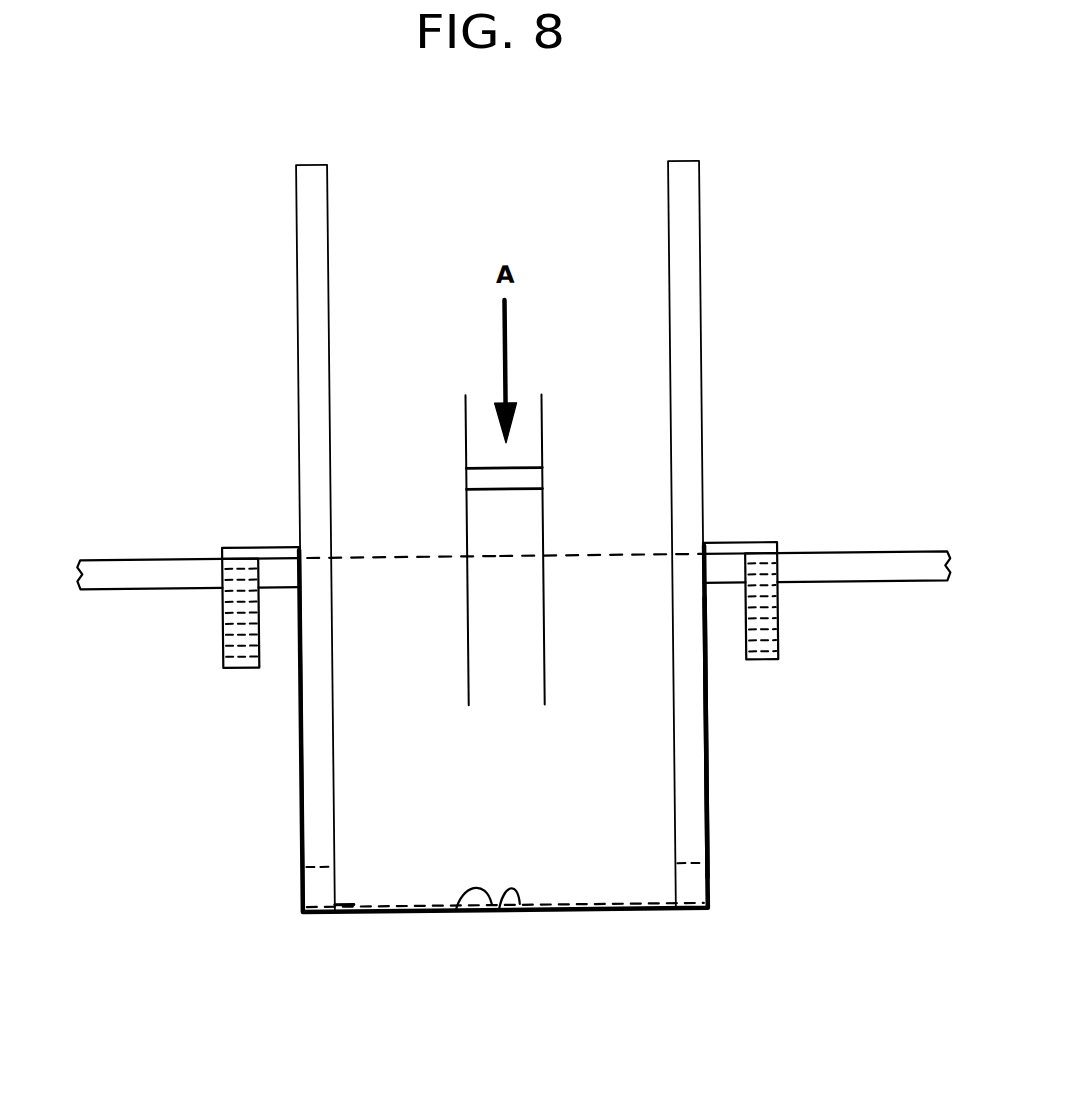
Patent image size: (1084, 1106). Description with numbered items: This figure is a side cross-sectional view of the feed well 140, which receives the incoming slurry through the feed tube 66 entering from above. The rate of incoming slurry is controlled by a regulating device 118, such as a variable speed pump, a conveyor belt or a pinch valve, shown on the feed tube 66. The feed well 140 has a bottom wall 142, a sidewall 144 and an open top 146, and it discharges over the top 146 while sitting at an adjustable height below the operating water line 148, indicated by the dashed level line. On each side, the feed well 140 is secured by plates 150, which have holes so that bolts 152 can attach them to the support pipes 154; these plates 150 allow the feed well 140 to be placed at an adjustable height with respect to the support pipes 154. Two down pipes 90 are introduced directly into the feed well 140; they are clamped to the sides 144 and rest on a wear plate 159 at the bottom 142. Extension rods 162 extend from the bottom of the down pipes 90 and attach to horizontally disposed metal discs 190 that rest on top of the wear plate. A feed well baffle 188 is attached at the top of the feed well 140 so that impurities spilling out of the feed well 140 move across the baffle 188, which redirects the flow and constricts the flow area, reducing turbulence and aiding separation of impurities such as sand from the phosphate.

The feed tube 66 is at (544, 421).
The down pipes 90 is at (337, 268).
The regulating device 118 is at (544, 478).
The feed well 140 is at (881, 190).
The bottom wall 142 is at (651, 915).
The sidewall 144 is at (706, 725).
The open top 146 is at (360, 556).
The operating water line 148 is at (637, 553).
The plates 150 is at (222, 650).
The bolts 152 is at (222, 612).
The support pipes 154 is at (140, 568).
The wear plate 159 is at (510, 890).
The extension rods 162 is at (686, 893).
The feed well baffle 188 is at (240, 546).
The metal discs 190 is at (342, 913).